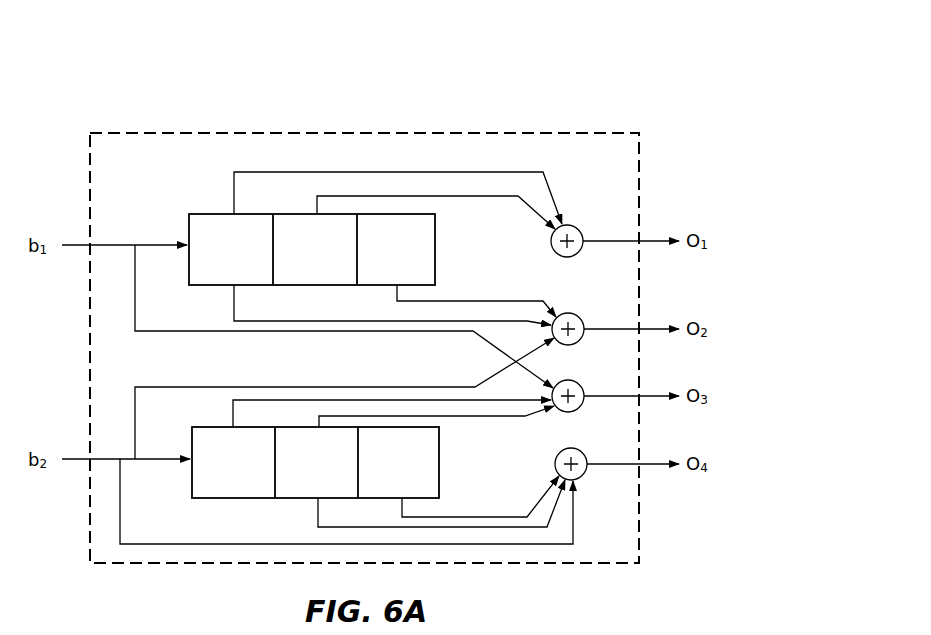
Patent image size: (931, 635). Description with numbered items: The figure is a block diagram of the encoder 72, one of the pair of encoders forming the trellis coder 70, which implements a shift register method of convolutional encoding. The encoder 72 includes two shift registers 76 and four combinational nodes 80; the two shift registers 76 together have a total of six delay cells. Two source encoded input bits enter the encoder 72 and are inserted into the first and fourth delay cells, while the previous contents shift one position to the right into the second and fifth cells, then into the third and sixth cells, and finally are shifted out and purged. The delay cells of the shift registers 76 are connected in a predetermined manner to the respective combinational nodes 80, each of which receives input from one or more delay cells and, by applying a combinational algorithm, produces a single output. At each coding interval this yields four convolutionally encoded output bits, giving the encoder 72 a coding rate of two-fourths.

The trellis coder 70 is at (530, 95).
The encoder 72 is at (640, 158).
The shift register 76 is at (189, 226).
The combinational node 80 is at (580, 227).